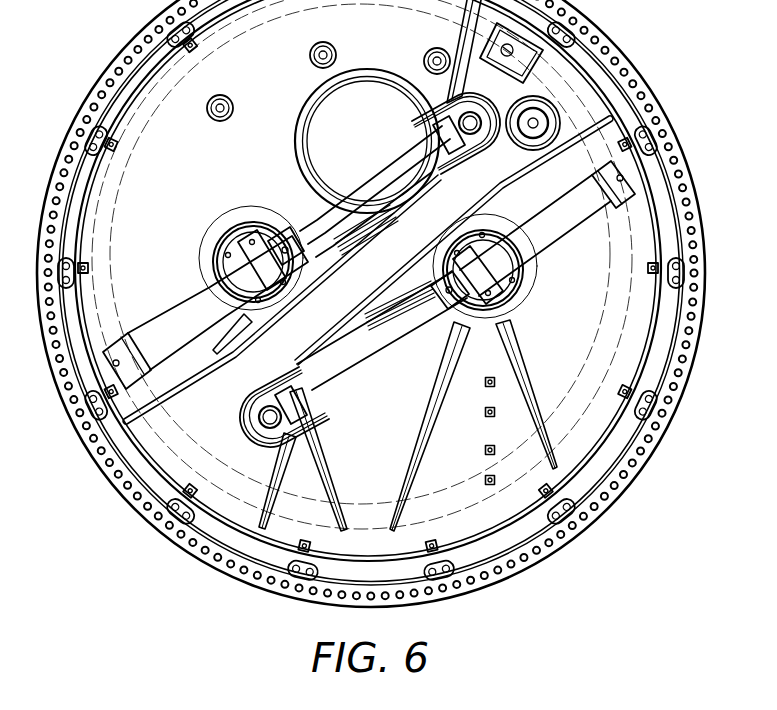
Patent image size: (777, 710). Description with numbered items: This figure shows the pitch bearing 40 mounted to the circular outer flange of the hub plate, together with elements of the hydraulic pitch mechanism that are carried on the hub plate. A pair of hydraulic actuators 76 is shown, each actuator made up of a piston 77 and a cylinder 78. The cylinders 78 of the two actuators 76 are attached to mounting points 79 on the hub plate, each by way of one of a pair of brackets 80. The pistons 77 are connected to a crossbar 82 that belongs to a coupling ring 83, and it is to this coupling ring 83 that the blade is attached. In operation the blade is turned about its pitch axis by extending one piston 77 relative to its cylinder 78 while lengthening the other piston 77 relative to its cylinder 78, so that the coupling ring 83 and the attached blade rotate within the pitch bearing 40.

The pitch bearing 40 is at (510, 547).
The hydraulic actuator 76 is at (279, 224).
The piston 77 is at (378, 190).
The cylinder 78 is at (167, 323).
The mounting point 79 is at (226, 232).
The bracket 80 is at (247, 262).
The crossbar 82 is at (165, 456).
The coupling ring 83 is at (605, 466).